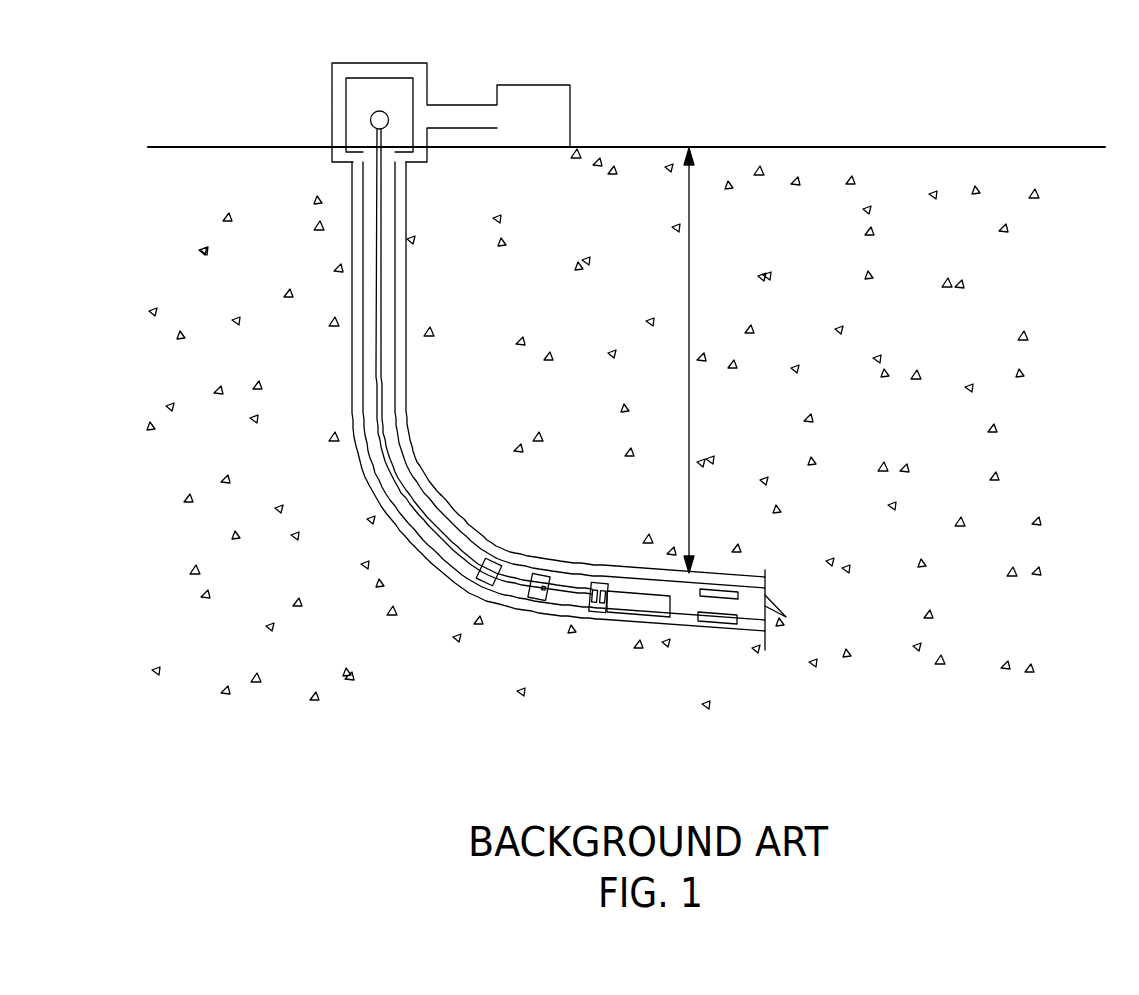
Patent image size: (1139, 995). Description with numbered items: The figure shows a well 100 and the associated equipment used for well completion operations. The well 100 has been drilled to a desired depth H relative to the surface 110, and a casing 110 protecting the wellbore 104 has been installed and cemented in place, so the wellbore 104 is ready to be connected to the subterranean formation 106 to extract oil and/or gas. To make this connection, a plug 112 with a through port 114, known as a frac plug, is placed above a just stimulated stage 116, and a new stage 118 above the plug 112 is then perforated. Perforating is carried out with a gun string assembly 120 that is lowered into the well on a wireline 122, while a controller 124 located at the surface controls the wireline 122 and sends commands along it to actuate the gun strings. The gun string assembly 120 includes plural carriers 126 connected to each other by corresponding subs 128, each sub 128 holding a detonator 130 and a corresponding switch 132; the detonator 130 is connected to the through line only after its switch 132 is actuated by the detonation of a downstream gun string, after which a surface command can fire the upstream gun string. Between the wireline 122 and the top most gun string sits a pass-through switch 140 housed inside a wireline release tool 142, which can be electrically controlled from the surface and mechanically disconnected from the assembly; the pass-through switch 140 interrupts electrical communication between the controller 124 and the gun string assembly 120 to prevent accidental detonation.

The well 100 is at (420, 393).
The wellbore 104 is at (418, 456).
The subterranean formation 106 is at (598, 327).
The surface 110 is at (905, 147).
The plug 112 is at (727, 596).
The through port 114 is at (725, 624).
The just stimulated stage 116 is at (786, 618).
The new stage 118 is at (640, 603).
The gun string assembly 120 is at (530, 553).
The wireline 122 is at (377, 292).
The controller 124 is at (535, 98).
The carriers 126 is at (590, 584).
The subs 128 is at (542, 574).
The detonator 130 is at (598, 614).
The switch 132 is at (531, 586).
The pass-through switch 140 is at (480, 572).
The wireline release tool 142 is at (482, 533).
The depth H is at (690, 303).